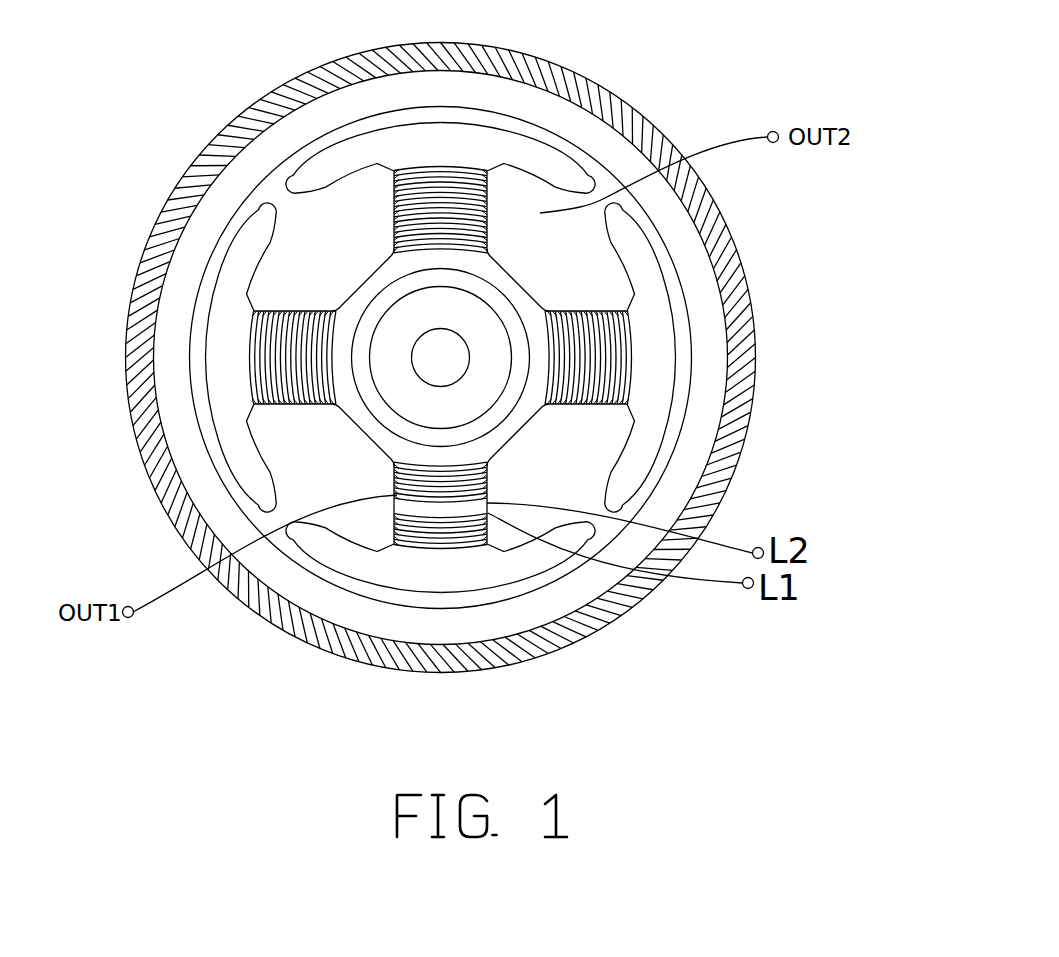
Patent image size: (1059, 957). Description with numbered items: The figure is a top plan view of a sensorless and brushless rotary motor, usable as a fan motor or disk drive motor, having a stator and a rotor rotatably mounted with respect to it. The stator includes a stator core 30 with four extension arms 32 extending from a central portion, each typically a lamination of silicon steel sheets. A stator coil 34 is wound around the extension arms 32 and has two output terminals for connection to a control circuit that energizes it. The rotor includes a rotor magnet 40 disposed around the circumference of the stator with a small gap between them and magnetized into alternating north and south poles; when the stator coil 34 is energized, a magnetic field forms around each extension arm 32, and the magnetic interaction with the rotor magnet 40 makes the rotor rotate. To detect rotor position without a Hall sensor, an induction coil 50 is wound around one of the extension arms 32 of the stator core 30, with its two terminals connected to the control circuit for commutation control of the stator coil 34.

The stator core 30 is at (357, 303).
The extension arms 32 is at (503, 153).
The stator coil 34 is at (394, 169).
The rotor magnet 40 is at (695, 282).
The induction coil 50 is at (467, 547).